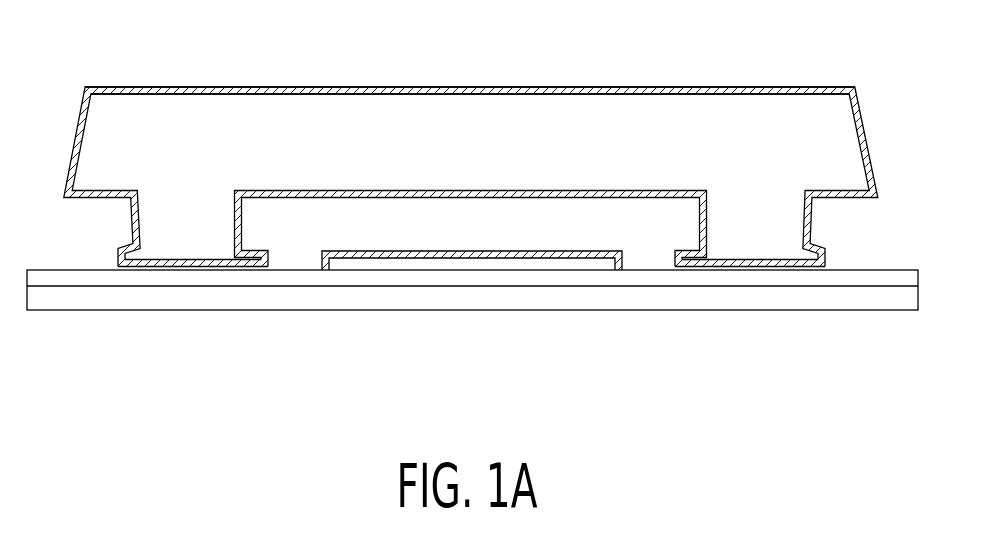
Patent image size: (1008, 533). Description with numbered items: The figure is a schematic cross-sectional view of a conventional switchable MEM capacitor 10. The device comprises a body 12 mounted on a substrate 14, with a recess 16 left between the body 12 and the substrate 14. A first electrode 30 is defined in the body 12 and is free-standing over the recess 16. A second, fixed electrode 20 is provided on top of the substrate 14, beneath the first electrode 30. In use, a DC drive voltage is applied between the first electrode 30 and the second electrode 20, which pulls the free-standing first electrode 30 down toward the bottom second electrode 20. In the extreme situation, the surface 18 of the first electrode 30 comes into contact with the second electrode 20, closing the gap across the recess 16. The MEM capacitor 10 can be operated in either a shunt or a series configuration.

The switchable MEM capacitor 10 is at (622, 311).
The body 12 is at (820, 108).
The substrate 14 is at (878, 295).
The recess 16 is at (296, 242).
The surface 18 is at (556, 211).
The second electrode 20 is at (482, 263).
The first electrode 30 is at (405, 122).